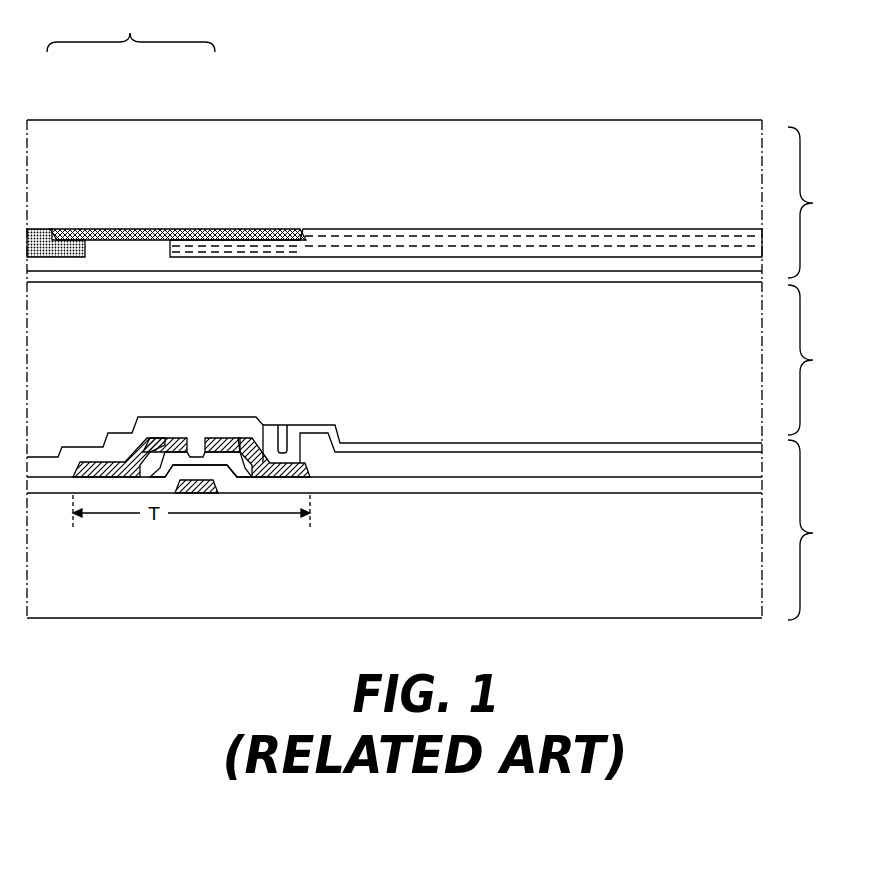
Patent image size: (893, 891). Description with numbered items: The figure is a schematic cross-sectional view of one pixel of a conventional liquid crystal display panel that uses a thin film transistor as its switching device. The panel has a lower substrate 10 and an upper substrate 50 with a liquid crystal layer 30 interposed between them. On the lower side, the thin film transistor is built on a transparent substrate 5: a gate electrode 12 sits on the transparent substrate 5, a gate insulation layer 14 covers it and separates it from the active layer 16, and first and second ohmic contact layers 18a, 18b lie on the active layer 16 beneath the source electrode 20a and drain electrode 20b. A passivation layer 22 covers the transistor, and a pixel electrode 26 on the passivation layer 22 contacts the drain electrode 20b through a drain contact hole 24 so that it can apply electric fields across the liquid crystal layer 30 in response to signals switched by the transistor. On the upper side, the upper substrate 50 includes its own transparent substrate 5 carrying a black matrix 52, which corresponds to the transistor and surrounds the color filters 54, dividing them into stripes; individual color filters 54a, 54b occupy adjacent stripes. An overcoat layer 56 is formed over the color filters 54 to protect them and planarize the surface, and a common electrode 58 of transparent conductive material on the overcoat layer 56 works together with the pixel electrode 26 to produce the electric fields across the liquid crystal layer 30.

The transparent substrate 5 is at (357, 188).
The lower substrate 10 is at (817, 530).
The gate electrode 12 is at (205, 494).
The gate insulation layer 14 is at (393, 494).
The active layer 16 is at (192, 457).
The first ohmic contact layer 18a is at (147, 440).
The second ohmic contact layer 18b is at (263, 438).
The source electrode 20a is at (87, 462).
The drain electrode 20b is at (222, 440).
The passivation layer 22 is at (481, 452).
The drain contact hole 24 is at (283, 413).
The pixel electrode 26 is at (579, 443).
The liquid crystal layer 30 is at (817, 360).
The upper substrate 50 is at (816, 202).
The black matrix 52 is at (277, 240).
The color filters 54 is at (166, 132).
The color filter 54a is at (200, 229).
The color filter 54b is at (42, 232).
The overcoat layer 56 is at (512, 265).
The common electrode 58 is at (630, 282).